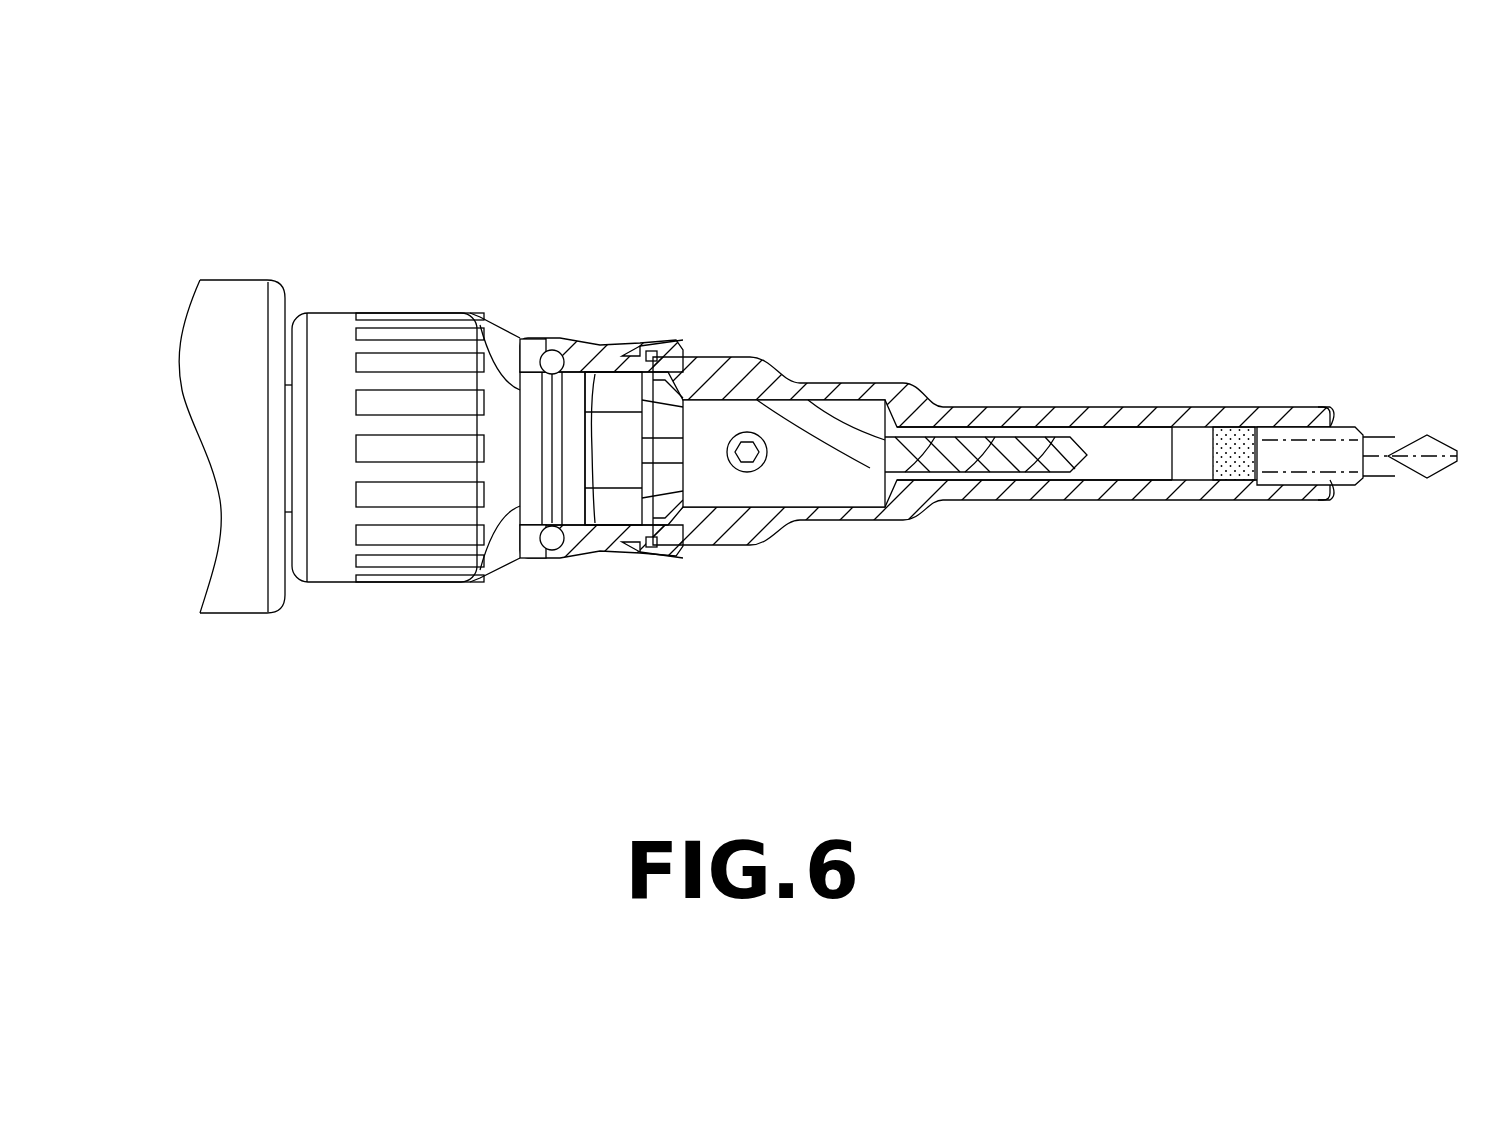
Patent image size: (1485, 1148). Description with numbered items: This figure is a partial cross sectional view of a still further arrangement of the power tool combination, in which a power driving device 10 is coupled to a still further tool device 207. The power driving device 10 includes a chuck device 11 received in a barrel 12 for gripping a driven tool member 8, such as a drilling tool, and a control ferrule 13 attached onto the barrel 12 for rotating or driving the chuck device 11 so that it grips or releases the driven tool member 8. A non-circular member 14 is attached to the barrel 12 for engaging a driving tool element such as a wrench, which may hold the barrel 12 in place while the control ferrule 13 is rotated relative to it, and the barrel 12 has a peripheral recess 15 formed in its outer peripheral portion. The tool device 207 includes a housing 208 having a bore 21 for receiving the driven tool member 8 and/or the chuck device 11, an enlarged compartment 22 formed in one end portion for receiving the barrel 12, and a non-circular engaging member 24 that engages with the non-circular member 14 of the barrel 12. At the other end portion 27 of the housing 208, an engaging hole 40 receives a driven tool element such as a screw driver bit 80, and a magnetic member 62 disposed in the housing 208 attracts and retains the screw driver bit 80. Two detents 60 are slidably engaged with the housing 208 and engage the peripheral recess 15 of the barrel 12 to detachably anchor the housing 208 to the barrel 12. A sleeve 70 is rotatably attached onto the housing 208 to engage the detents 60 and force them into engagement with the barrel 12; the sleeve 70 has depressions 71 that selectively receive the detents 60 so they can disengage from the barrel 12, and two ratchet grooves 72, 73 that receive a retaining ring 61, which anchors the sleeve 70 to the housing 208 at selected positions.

The power driving device 10 is at (198, 218).
The control ferrule 13 is at (330, 323).
The enlarged compartment 22 is at (530, 370).
The barrel 12 is at (537, 502).
The peripheral recess 15 is at (578, 558).
The sleeve 70 is at (602, 350).
The depressions 71 is at (535, 350).
The detents 60 is at (552, 542).
The ratchet groove 72 is at (633, 353).
The ratchet groove 73 is at (655, 353).
The retaining ring 61 is at (657, 356).
The non-circular member 14 is at (608, 512).
The engaging member 24 is at (662, 492).
The tool device 207 is at (946, 250).
The housing 208 is at (763, 522).
The chuck device 11 is at (670, 500).
The driven tool member 8 is at (984, 462).
The bore 21 is at (1132, 465).
The magnetic member 62 is at (1233, 467).
The engaging hole 40 is at (1295, 483).
The screw driver bit 80 is at (1383, 475).
The other end portion 27 is at (1315, 405).